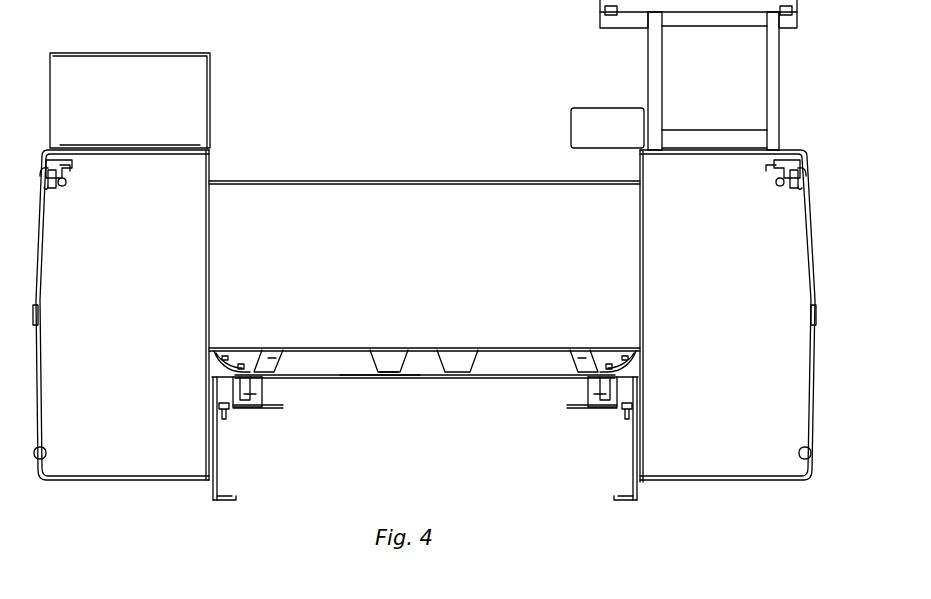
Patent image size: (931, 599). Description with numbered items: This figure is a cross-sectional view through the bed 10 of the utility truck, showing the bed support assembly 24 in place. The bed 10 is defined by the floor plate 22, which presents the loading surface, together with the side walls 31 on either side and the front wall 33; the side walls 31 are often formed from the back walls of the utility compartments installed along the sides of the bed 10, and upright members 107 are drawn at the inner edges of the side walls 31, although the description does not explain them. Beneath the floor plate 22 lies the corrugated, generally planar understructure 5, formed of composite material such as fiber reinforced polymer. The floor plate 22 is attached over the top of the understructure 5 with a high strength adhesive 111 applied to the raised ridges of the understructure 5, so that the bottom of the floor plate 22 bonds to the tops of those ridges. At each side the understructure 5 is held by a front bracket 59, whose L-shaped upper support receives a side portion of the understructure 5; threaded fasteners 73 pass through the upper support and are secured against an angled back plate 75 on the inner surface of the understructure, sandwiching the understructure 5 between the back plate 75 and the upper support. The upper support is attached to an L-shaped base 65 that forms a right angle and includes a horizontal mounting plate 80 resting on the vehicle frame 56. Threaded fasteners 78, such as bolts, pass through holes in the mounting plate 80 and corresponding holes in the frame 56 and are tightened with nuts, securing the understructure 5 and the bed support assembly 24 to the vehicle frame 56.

The understructure 5 is at (382, 400).
The bed 10 is at (463, 348).
The floor plate 22 is at (420, 348).
The bed support assembly 24 is at (468, 392).
The side walls 31 is at (212, 216).
The front wall 33 is at (422, 180).
The vehicle frame 56 is at (232, 488).
The front bracket 59 is at (198, 352).
The base 65 is at (212, 385).
The threaded fasteners 73 is at (258, 398).
The back plate 75 is at (243, 350).
The threaded fasteners 78 is at (215, 425).
The mounting plate 80 is at (226, 414).
The vertical post 107 is at (212, 342).
The high strength adhesive 111 is at (393, 375).